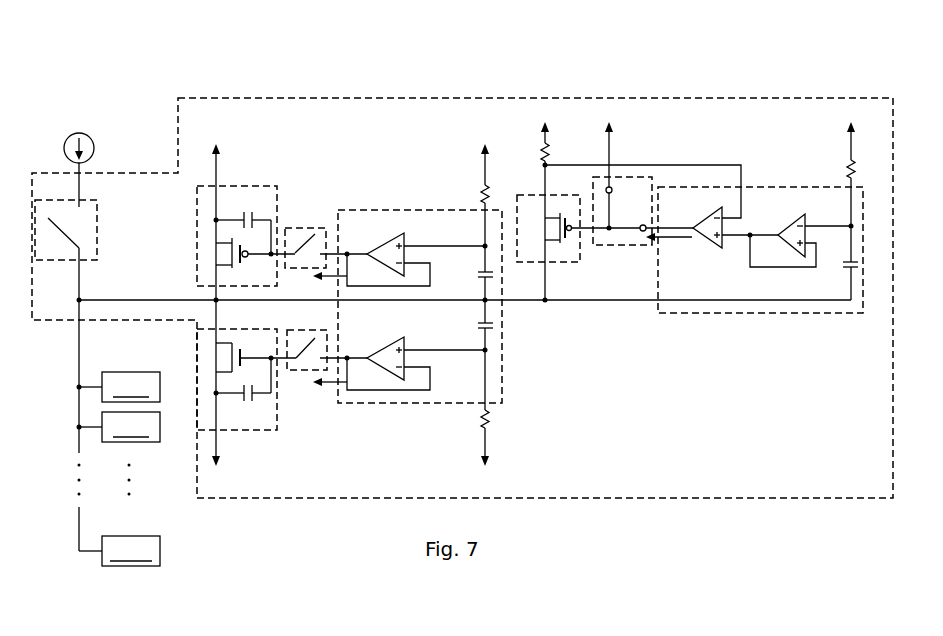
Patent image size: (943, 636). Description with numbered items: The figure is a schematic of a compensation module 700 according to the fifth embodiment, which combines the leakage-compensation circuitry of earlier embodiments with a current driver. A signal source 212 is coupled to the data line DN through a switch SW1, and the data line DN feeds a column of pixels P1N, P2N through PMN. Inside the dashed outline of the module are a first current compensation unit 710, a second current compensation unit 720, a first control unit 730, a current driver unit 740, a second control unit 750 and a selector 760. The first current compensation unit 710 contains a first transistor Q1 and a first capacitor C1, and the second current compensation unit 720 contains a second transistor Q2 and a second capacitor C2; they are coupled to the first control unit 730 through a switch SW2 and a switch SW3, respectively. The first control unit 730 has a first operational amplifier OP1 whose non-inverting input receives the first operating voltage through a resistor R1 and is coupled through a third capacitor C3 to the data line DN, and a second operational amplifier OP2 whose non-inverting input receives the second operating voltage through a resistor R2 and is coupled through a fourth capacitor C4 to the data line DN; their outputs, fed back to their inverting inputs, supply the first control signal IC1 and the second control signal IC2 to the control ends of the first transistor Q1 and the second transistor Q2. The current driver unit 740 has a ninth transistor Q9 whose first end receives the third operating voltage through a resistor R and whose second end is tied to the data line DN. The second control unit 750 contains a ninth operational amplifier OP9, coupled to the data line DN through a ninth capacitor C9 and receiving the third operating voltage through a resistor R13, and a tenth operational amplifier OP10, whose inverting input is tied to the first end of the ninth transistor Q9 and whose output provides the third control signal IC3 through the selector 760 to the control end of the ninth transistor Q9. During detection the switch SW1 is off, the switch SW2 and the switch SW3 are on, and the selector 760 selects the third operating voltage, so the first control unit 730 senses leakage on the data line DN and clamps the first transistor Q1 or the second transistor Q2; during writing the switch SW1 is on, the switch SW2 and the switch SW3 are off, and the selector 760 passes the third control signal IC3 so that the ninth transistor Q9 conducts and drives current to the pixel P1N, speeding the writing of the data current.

The compensation module 700 is at (151, 99).
The signal source 212 is at (80, 130).
The first current compensation unit 710 is at (246, 215).
The second current compensation unit 720 is at (246, 393).
The first control unit 730 is at (420, 306).
The current driver unit 740 is at (578, 204).
The second control unit 750 is at (754, 237).
The selector 760 is at (624, 246).
The switch SW1 is at (97, 229).
The switch SW2 is at (303, 228).
The switch SW3 is at (300, 373).
The data line DN is at (78, 350).
The pixel P1N is at (119, 387).
The pixel P2N is at (119, 427).
The pixel PMN is at (131, 551).
The first transistor Q1 is at (248, 253).
The second transistor Q2 is at (249, 357).
The ninth transistor Q9 is at (586, 228).
The first capacitor C1 is at (244, 226).
The second capacitor C2 is at (243, 389).
The third capacitor C3 is at (474, 294).
The fourth capacitor C4 is at (474, 366).
The ninth capacitor C9 is at (841, 280).
The resistor R is at (541, 204).
The resistor R1 is at (479, 199).
The resistor R2 is at (476, 448).
The resistor R13 is at (839, 184).
The first operational amplifier OP1 is at (416, 258).
The second operational amplifier OP2 is at (416, 363).
The ninth operational amplifier OP9 is at (802, 240).
The tenth operational amplifier OP10 is at (712, 226).
The first control signal IC1 is at (328, 286).
The second control signal IC2 is at (328, 391).
The third control signal IC3 is at (669, 245).